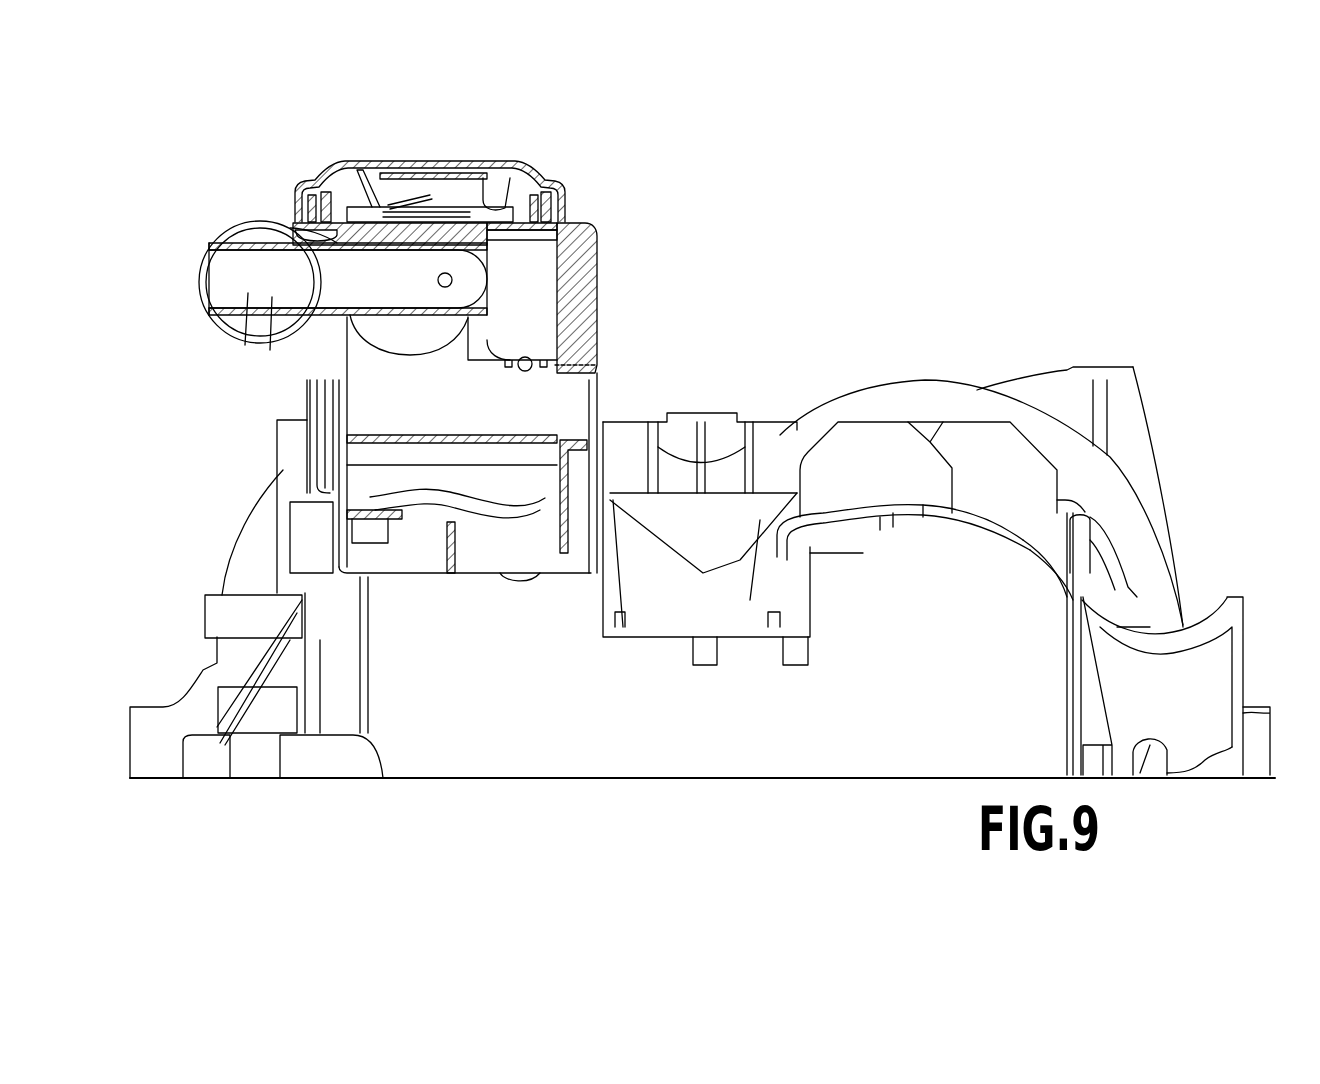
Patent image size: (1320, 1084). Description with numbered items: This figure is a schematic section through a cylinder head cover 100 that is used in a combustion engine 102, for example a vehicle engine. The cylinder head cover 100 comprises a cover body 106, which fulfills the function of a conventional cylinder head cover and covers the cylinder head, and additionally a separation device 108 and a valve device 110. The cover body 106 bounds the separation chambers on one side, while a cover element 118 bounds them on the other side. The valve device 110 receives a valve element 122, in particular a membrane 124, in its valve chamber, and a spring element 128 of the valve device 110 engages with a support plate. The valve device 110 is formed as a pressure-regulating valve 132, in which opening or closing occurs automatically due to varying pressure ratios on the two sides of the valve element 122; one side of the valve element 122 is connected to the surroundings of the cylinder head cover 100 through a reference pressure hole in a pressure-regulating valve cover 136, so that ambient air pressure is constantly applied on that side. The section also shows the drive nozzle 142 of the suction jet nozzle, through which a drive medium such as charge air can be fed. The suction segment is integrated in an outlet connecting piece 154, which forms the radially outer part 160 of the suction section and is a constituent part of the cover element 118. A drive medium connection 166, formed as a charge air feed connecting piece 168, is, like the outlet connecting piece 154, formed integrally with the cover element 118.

The cylinder head cover 100 is at (770, 157).
The combustion engine 102 is at (868, 192).
The cover body 106 is at (965, 350).
The separation device 108 is at (612, 367).
The valve device 110 is at (402, 147).
The cover element 118 is at (578, 218).
The valve element 122 is at (332, 160).
The membrane 124 is at (357, 160).
The spring element 128 is at (455, 160).
The pressure-regulating valve 132 is at (432, 152).
The pressure-regulating valve cover 136 is at (503, 160).
The drive nozzle 142 is at (452, 280).
The outlet connecting piece 154 is at (282, 240).
The radially outer part 160 is at (235, 240).
The drive medium connection 166 is at (210, 322).
The charge air feed connecting piece 168 is at (258, 345).